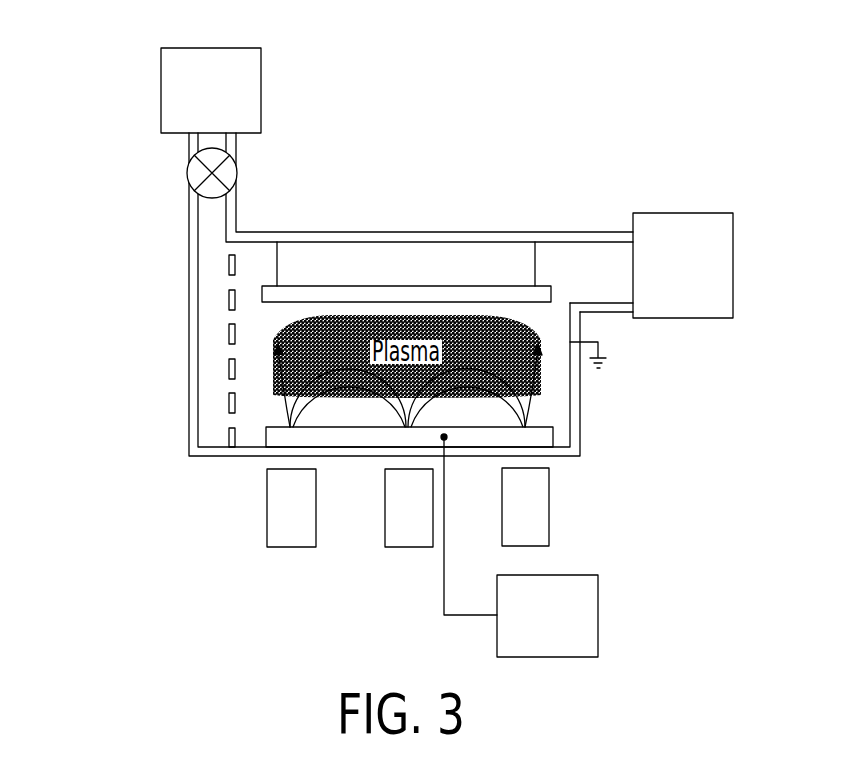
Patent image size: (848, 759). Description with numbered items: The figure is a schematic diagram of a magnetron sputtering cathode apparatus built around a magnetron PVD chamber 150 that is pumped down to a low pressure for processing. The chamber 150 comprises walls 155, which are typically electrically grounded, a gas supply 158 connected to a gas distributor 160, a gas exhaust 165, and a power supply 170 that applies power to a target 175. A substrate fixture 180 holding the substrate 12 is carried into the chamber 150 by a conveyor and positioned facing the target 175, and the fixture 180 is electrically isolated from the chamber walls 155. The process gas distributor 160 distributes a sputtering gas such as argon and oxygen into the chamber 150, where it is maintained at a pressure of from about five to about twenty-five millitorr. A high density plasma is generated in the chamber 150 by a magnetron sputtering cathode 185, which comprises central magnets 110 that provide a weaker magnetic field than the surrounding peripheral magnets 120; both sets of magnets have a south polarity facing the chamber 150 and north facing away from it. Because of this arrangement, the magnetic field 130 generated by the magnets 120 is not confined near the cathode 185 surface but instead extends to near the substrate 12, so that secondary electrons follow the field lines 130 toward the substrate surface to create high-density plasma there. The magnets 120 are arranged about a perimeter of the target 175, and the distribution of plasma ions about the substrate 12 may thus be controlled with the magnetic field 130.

The magnetron PVD chamber 150 is at (130, 245).
The gas supply 158 is at (261, 66).
The gas exhaust 165 is at (752, 247).
The chamber walls 155 is at (560, 318).
The substrate fixture 180 is at (424, 277).
The gas distributor 160 is at (241, 353).
The substrate 12 is at (295, 305).
The magnetic field 130 is at (315, 401).
The target 175 is at (437, 427).
The magnetron sputtering cathode 185 is at (562, 426).
The peripheral magnets 120 is at (267, 498).
The central magnets 110 is at (385, 498).
The power supply 170 is at (598, 593).